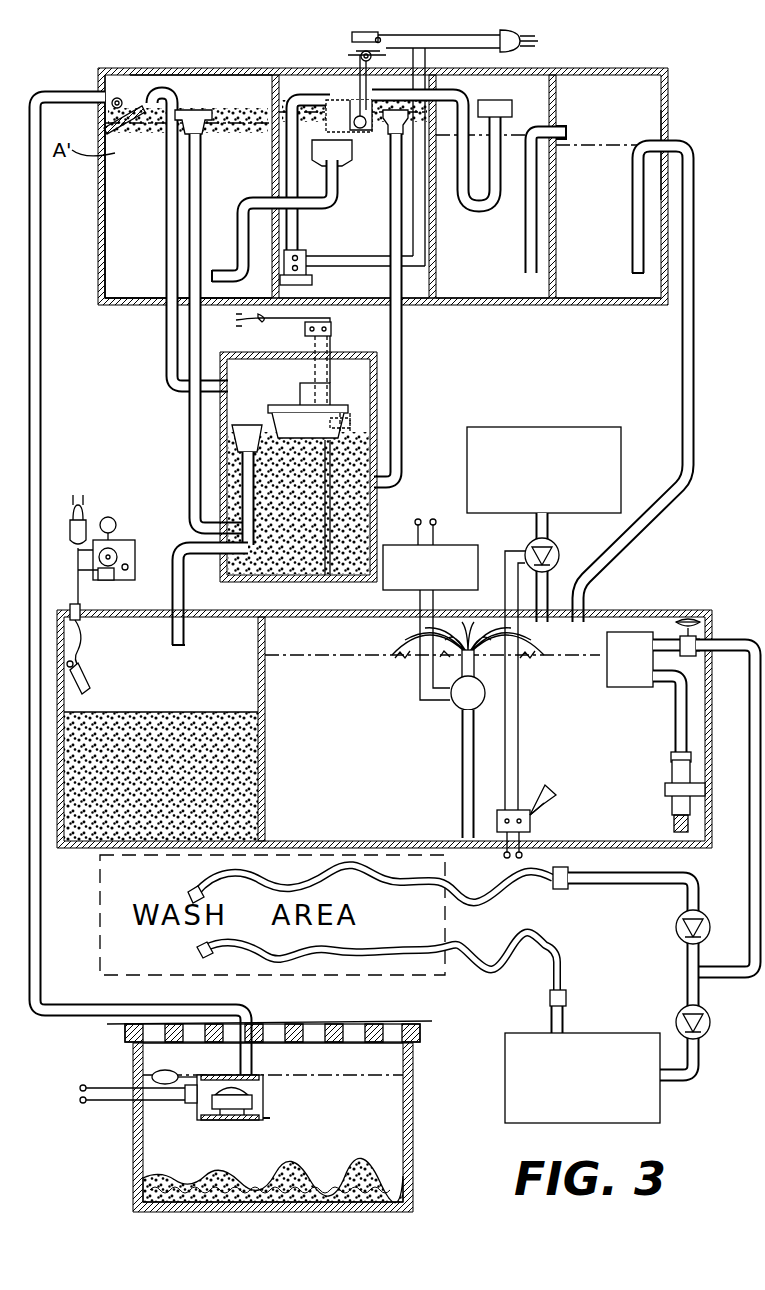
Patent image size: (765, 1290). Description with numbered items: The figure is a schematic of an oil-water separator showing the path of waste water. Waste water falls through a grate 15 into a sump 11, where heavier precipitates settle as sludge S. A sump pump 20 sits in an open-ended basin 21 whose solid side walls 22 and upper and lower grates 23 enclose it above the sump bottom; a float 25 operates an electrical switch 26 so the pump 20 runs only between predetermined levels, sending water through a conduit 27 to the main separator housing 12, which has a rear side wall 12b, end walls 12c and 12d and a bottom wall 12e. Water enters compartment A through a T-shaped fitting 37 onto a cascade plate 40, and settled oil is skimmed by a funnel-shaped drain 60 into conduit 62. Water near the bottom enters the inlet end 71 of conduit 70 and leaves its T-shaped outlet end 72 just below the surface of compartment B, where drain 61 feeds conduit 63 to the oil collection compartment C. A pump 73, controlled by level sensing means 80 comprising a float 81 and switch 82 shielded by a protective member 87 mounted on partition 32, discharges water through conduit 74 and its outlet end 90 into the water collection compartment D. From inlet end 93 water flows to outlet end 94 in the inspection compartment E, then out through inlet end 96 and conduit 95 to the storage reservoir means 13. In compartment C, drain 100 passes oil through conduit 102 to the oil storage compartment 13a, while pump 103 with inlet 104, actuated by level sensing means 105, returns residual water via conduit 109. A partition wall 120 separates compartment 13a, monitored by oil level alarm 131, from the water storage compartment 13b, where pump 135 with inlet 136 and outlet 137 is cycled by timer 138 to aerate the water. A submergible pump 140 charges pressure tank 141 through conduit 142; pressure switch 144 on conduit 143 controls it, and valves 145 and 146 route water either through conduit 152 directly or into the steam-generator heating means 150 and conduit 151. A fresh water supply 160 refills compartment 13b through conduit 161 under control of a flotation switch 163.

The sump 11 is at (131, 1148).
The main separator housing 12 is at (672, 95).
The rear side wall 12b is at (225, 100).
The end wall 12c is at (100, 205).
The end wall 12d is at (669, 110).
The bottom wall 12e is at (130, 300).
The storage reservoir means 13 is at (655, 612).
The oil storage compartment 13a is at (112, 668).
The water storage compartment 13b is at (322, 729).
The grate 15 is at (372, 1022).
The sump pump 20 is at (235, 1120).
The basin 21 is at (272, 1120).
The side walls 22 is at (265, 1098).
The grates 23 is at (258, 1075).
The float 25 is at (163, 1070).
The electrical switch 26 is at (190, 1103).
The conduit 27 is at (42, 410).
The partition 32 is at (275, 75).
The T-shaped pipe fitting 37 is at (110, 106).
The cascade plate 40 is at (122, 101).
The first drain 60 is at (205, 120).
The second drain 61 is at (395, 140).
The conduit 62 is at (190, 428).
The conduit 63 is at (402, 358).
The conduit 70 is at (320, 195).
The inlet end 71 is at (212, 270).
The outlet end 72 is at (350, 158).
The pump 73 is at (312, 283).
The conduit 74 is at (296, 95).
The water level sensing means 80 is at (345, 45).
The float 81 is at (375, 92).
The switch 82 is at (392, 32).
The protective member 87 is at (343, 114).
The outlet end 90 is at (512, 104).
The inlet end 93 is at (524, 271).
The outlet end 94 is at (568, 132).
The conduit 95 is at (696, 270).
The inlet end 96 is at (632, 271).
The drain 100 is at (255, 430).
The conduit 102 is at (182, 596).
The pump 103 is at (330, 405).
The inlet 104 is at (330, 580).
The level sensing means 105 is at (352, 420).
The conduit 109 is at (165, 362).
The partition wall 120 is at (266, 680).
The oil level alarm 131 is at (140, 560).
The water pump 135 is at (454, 712).
The inlet 136 is at (458, 835).
The outlet 137 is at (460, 665).
The timer 138 is at (466, 540).
The submergible pump 140 is at (670, 805).
The pressure tank 141 is at (630, 687).
The conduit 142 is at (678, 740).
The conduit 143 is at (745, 885).
The pressure switch 144 is at (688, 616).
The valve 145 is at (676, 927).
The valve 146 is at (676, 1018).
The heating means 150 is at (660, 1104).
The conduit 151 is at (565, 970).
The conduit 152 is at (548, 892).
The fresh water supply 160 is at (598, 426).
The conduit 161 is at (570, 578).
The flotation switch 163 is at (530, 810).
The composite settling and separation compartment A is at (208, 75).
The second oil-water separation compartment B is at (420, 303).
The oil collection compartment C is at (380, 500).
The water collection compartment D is at (514, 303).
The water inspection compartment E is at (636, 303).
The sludge S is at (312, 1178).